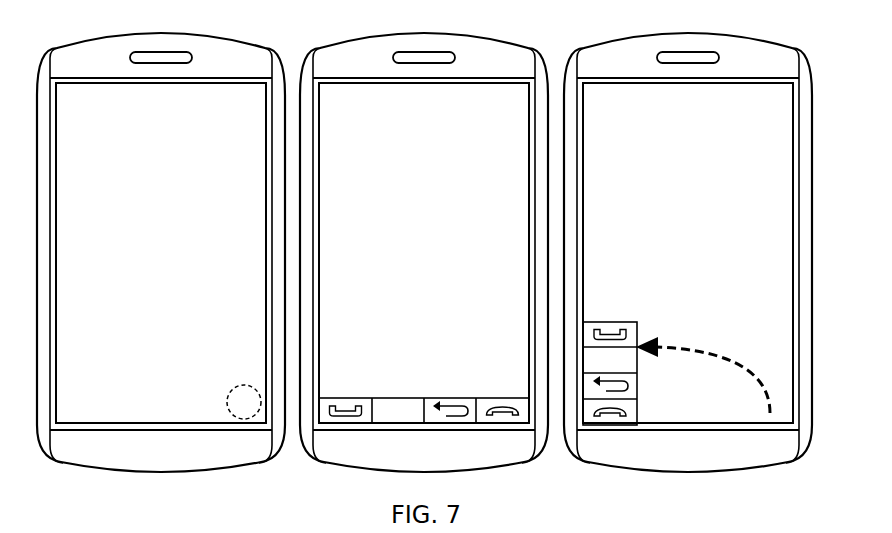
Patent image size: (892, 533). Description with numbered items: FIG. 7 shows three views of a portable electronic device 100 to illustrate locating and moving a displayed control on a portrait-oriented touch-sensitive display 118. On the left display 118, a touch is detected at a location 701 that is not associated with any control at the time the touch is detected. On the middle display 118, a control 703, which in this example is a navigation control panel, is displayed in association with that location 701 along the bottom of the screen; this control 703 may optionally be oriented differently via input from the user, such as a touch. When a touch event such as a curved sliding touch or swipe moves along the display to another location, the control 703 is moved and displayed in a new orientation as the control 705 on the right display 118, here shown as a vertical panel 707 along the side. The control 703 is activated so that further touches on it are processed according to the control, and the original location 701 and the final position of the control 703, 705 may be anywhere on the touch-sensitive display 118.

The portable electronic device 100 is at (242, 31).
The touch-sensitive display 118 is at (97, 95).
The location 701 is at (227, 398).
The control 703 is at (370, 410).
The control 705 is at (728, 365).
The vertical toolbar 707 is at (637, 410).